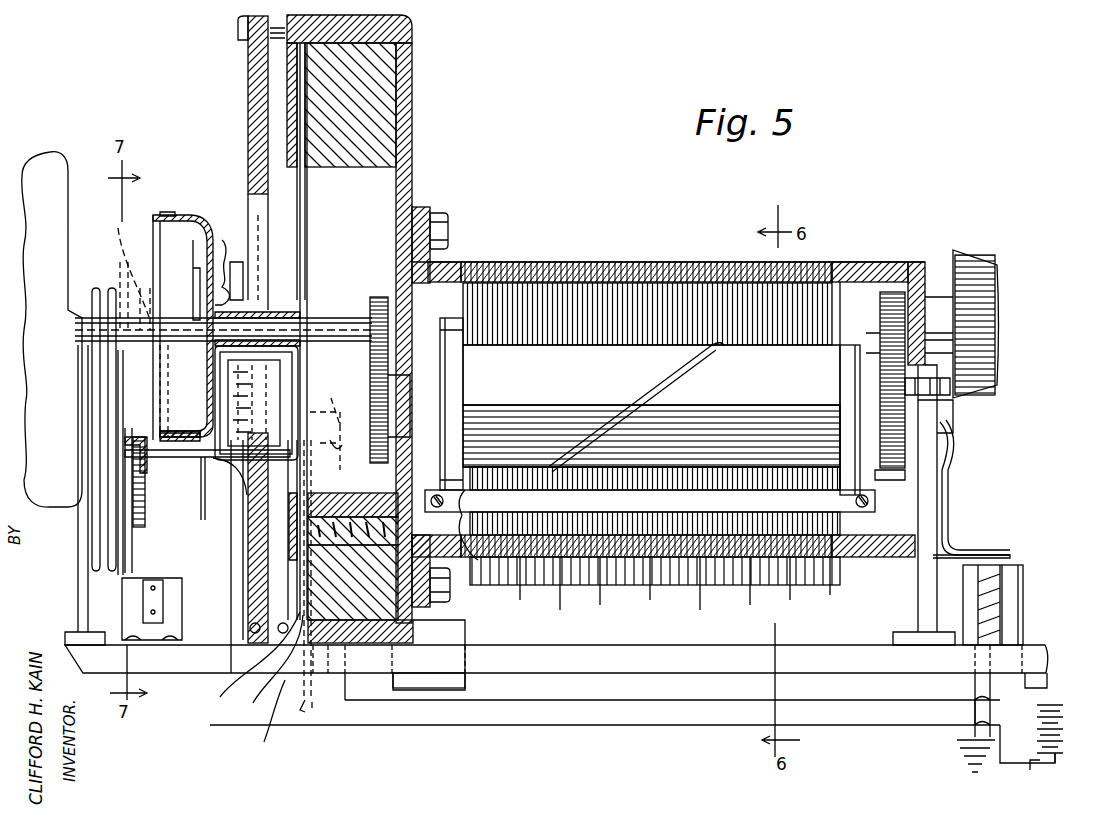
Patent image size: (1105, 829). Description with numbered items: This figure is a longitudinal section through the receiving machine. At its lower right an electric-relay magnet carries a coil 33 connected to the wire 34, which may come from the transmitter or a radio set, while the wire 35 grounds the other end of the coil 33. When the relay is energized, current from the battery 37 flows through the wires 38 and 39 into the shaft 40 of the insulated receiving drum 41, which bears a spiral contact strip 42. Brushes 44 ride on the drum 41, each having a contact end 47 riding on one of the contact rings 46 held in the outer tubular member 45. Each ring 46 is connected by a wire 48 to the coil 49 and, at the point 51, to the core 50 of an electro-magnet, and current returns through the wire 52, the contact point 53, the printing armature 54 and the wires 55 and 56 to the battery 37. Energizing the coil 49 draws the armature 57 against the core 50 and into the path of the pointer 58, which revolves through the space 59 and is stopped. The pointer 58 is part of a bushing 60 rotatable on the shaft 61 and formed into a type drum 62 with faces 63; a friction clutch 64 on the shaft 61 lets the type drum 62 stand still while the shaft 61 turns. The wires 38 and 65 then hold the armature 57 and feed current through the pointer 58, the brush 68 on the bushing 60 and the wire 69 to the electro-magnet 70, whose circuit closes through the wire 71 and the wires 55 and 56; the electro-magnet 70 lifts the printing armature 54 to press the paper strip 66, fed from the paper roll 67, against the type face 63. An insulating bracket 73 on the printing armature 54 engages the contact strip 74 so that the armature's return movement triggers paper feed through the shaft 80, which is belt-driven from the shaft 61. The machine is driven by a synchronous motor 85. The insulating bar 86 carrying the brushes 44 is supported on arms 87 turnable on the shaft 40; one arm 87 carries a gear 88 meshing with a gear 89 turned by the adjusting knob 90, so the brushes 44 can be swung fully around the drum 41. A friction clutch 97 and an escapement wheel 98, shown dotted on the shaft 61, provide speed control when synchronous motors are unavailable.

The coil 33 is at (1000, 590).
The wire 34 is at (1030, 623).
The wire 35 is at (972, 712).
The battery 37 is at (1063, 745).
The wire 38 is at (505, 725).
The wire 39 is at (993, 712).
The shaft 40 is at (950, 413).
The receiving drum 41 is at (830, 330).
The spiral contact strip 42 is at (676, 365).
The brushes 44 is at (512, 580).
The outer tubular member 45 is at (860, 262).
The contact rings 46 is at (672, 262).
The contact end 47 is at (840, 560).
The wire 48 is at (415, 632).
The coil 49 is at (358, 505).
The core 50 is at (330, 493).
The connection point 51 is at (392, 503).
The wire 52 is at (238, 597).
The contact point 53 is at (213, 480).
The printing armature 54 is at (203, 520).
The wire 55 is at (362, 688).
The wire 56 is at (975, 555).
The armature 57 is at (288, 510).
The pointer 58 is at (270, 667).
The space 59 is at (249, 662).
The bushing 60 is at (300, 312).
The shaft 61 is at (352, 335).
The type drum 62 is at (195, 218).
The type faces 63 is at (168, 212).
The friction clutch 64 is at (192, 270).
The wire 65 is at (222, 596).
The paper strip 66 is at (145, 440).
The paper roll 67 is at (172, 433).
The brush 68 is at (228, 272).
The wire 69 is at (308, 243).
The electro-magnet 70 is at (272, 378).
The wire 71 is at (326, 432).
The bracket 73 is at (150, 490).
The contact strip 74 is at (126, 440).
The shaft 80 is at (120, 470).
The synchronous motor 85 is at (46, 178).
The insulating bar 86 is at (850, 512).
The arms 87 is at (440, 370).
The gear 88 is at (892, 470).
The gear 89 is at (893, 290).
The adjusting knob 90 is at (975, 265).
The friction clutch 97 is at (118, 240).
The escapement wheel 98 is at (176, 391).